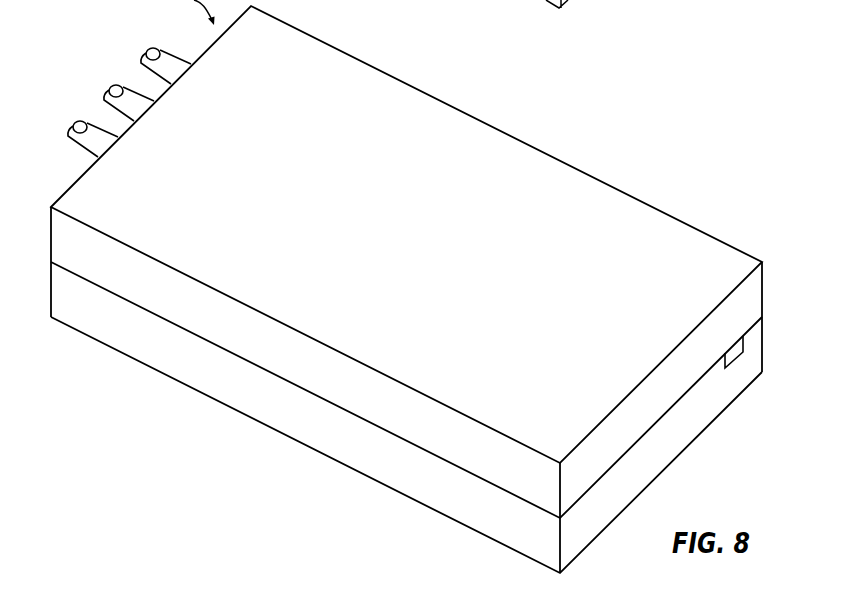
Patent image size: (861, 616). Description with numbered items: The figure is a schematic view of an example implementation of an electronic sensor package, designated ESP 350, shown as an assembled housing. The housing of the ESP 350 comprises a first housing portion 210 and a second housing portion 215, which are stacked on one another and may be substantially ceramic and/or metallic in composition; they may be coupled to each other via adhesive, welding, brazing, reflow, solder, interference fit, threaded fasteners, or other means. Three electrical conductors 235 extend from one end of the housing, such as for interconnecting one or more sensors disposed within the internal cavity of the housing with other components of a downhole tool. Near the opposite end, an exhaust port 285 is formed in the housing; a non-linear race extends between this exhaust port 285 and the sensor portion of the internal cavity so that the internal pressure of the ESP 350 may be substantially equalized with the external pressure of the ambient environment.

The first housing portion 210 is at (256, 89).
The second housing portion 215 is at (140, 345).
The electrical conductors 235 is at (175, 67).
The exhaust port 285 is at (734, 367).
The ESP 350 is at (590, 116).